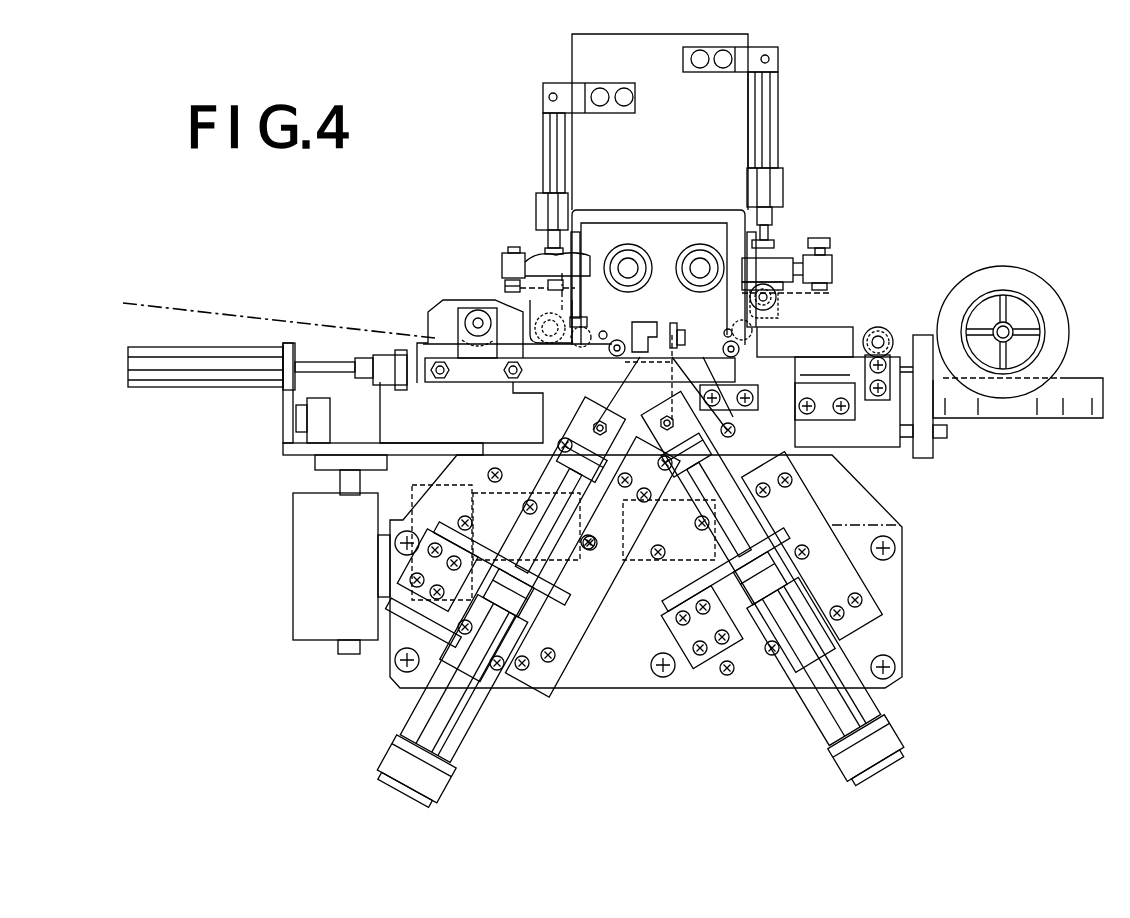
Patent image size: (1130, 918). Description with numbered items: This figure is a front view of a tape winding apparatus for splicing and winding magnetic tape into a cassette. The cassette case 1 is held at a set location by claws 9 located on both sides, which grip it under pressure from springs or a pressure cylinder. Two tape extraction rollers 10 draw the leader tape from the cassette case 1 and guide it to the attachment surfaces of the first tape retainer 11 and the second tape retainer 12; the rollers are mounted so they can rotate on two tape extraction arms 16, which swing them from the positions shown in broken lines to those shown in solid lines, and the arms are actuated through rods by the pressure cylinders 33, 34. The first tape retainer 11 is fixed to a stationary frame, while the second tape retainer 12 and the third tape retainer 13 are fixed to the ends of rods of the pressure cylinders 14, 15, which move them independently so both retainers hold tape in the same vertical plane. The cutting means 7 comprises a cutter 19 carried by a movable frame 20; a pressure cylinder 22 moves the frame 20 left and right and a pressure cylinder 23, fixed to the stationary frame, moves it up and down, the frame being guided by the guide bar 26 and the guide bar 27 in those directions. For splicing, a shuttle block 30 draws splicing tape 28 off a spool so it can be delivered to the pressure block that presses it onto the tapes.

The cassette case 1 is at (612, 230).
The cutting means 7 is at (418, 317).
The claws 9 is at (548, 250).
The tape extraction rollers 10 is at (733, 262).
The first tape retainer 11 is at (742, 380).
The second tape retainer 12 is at (648, 332).
The third tape retainer 13 is at (645, 360).
The pressure cylinder 14 is at (828, 737).
The pressure cylinder 15 is at (468, 733).
The tape extraction arms 16 is at (540, 322).
The cutter 19 is at (670, 345).
The movable frame 20 is at (570, 381).
The pressure cylinder 22 is at (222, 386).
The pressure cylinder 23 is at (385, 598).
The guide bar 26 is at (343, 418).
The guide bar 27 is at (330, 488).
The splicing tape 28 is at (937, 316).
The shuttle block 30 is at (873, 327).
The pressure cylinder 33 is at (782, 97).
The cylinder 34 is at (541, 108).